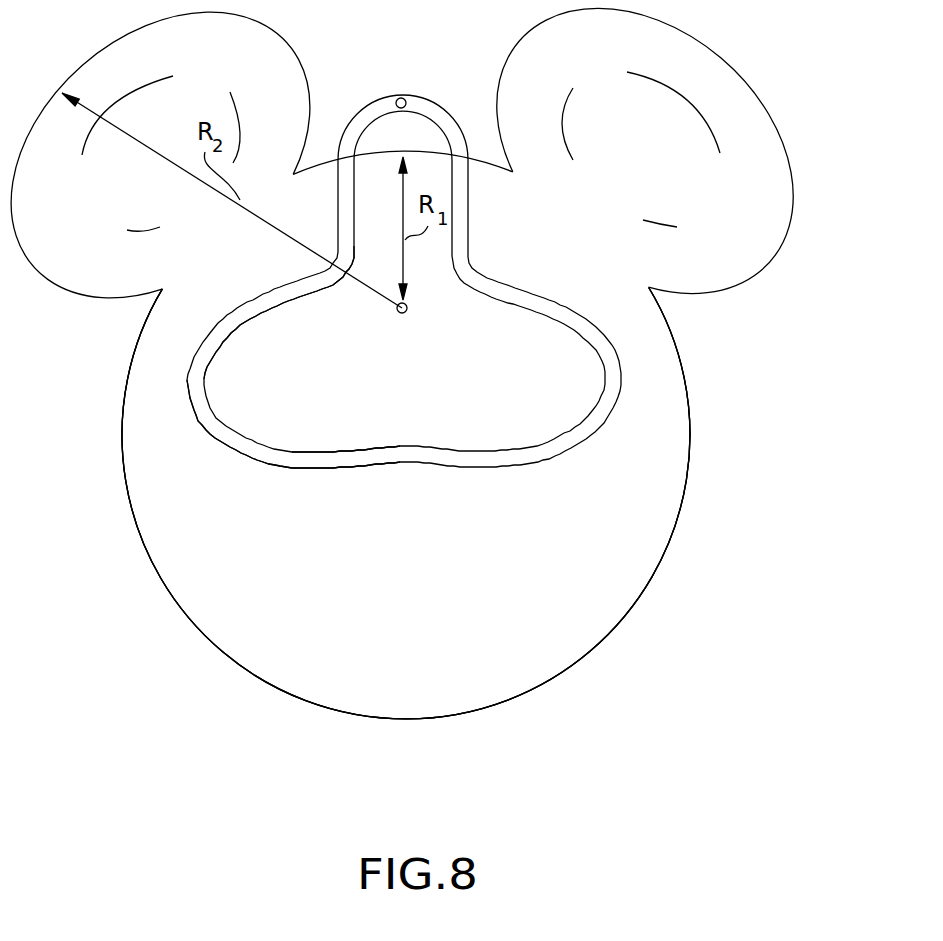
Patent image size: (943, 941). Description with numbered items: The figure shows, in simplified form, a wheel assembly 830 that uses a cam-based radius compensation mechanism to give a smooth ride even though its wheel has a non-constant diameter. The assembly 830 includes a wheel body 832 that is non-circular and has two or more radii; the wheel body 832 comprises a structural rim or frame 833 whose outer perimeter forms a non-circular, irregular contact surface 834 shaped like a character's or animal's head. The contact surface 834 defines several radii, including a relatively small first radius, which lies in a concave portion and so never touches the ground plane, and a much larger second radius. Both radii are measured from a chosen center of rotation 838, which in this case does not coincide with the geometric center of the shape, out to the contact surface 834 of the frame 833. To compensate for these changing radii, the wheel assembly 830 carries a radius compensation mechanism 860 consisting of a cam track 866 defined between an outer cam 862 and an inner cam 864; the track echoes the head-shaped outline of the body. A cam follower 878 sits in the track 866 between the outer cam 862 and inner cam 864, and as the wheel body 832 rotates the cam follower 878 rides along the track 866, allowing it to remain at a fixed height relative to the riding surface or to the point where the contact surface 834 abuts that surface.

The wheel assembly 830 is at (608, 710).
The wheel body 832 is at (190, 620).
The structural rim or frame 833 is at (288, 638).
The contact surface 834 is at (310, 703).
The center of rotation 838 is at (407, 312).
The radius compensation mechanism 860 is at (577, 455).
The outer cam 862 is at (337, 466).
The inner cam 864 is at (253, 443).
The cam track 866 is at (295, 458).
The cam follower 878 is at (404, 97).